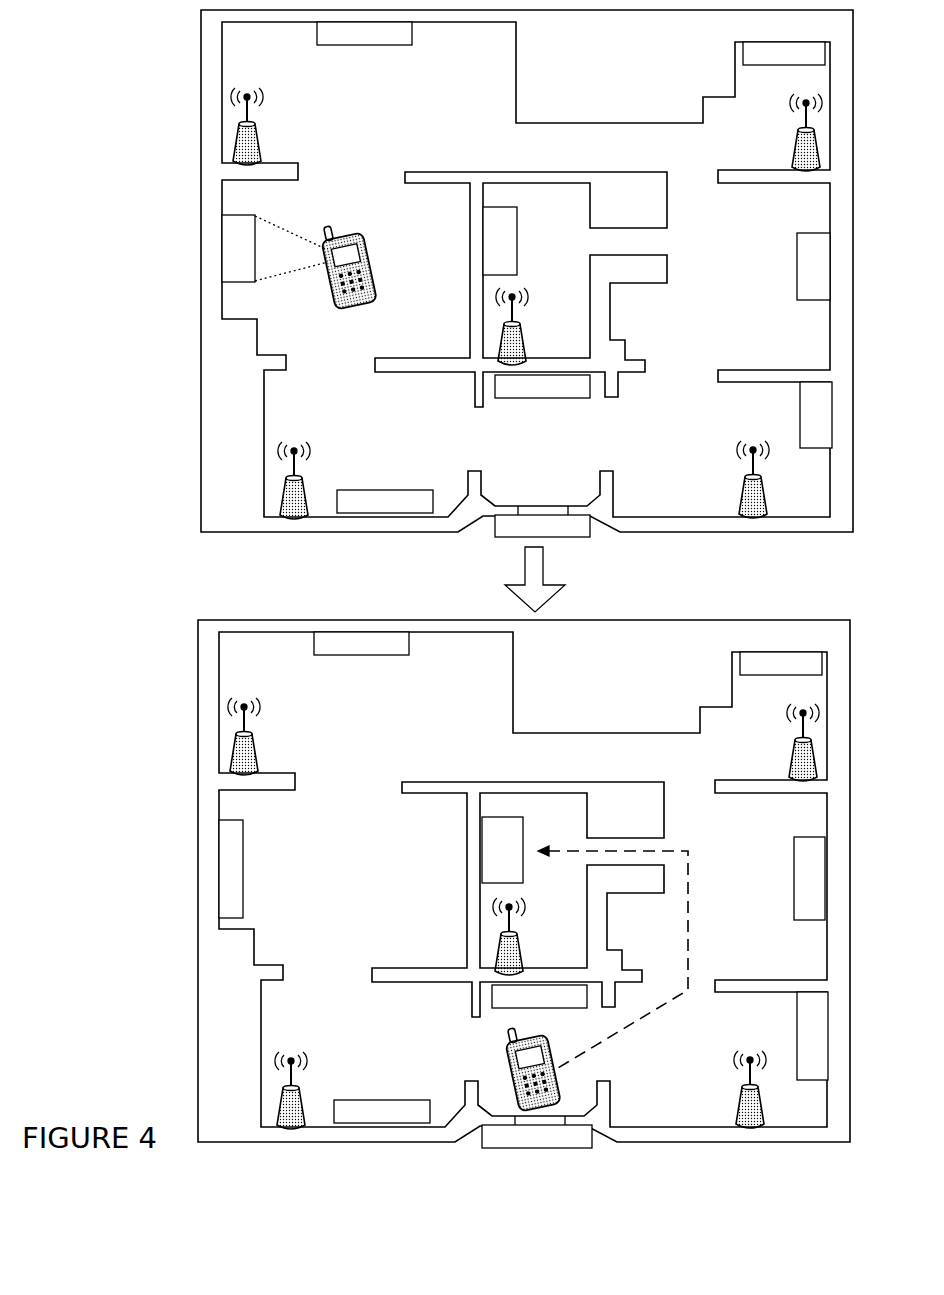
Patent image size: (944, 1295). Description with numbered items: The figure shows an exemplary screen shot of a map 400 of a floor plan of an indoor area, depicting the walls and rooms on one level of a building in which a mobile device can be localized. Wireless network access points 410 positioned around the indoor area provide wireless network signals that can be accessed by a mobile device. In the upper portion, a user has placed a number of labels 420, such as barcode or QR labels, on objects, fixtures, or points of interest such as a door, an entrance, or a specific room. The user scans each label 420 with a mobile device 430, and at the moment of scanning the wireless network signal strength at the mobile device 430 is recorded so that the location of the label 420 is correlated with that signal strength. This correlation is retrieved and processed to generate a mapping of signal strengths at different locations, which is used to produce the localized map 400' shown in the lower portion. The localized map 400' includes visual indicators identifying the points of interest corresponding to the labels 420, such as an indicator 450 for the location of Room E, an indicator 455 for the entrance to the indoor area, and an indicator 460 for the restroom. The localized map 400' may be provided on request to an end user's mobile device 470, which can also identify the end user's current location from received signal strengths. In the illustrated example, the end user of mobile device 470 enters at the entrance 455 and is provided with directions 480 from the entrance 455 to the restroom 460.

The map 400 is at (460, 311).
The localized map 400' is at (458, 881).
The wireless network access point 410 is at (242, 147).
The label 420 is at (222, 257).
The mobile device 430 is at (335, 224).
The indicator 450 is at (218, 862).
The indicator 455 is at (482, 1142).
The indicator 460 is at (482, 862).
The mobile device 470 is at (512, 1082).
The directions 480 is at (688, 872).